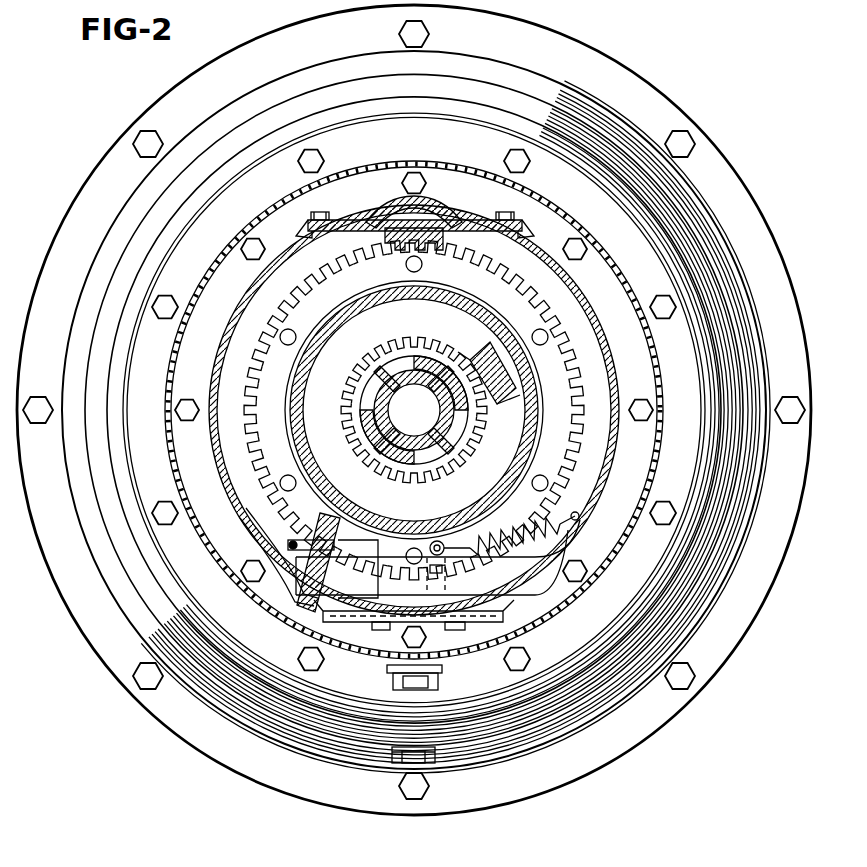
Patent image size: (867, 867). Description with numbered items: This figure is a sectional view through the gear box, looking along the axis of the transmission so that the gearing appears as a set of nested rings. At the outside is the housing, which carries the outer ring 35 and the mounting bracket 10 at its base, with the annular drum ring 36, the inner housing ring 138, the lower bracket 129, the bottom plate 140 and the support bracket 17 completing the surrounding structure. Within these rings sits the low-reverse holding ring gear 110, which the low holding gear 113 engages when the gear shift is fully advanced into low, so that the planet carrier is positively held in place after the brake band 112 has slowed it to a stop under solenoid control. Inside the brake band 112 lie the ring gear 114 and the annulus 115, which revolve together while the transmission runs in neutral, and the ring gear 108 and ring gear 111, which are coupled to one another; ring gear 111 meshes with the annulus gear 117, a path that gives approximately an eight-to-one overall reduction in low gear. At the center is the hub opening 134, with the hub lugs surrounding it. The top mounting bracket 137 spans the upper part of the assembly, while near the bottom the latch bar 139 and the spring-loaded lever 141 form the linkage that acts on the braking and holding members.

The housing mounting bracket 10 is at (406, 766).
The support bracket 17 is at (442, 680).
The outer housing ring 35 is at (118, 232).
The annular drum ring 36 is at (256, 223).
The ring gear 108 is at (364, 394).
The low-reverse holding ring gear 110 is at (250, 422).
The ring gear 111 is at (364, 407).
The brake band 112 is at (296, 447).
The low holding gear 113 is at (403, 254).
The ring gear 114 is at (366, 425).
The annulus 115 is at (368, 370).
The annulus gear 117 is at (472, 357).
The support bracket 129 is at (300, 584).
The shaft opening 134 is at (428, 420).
The top mounting bracket 137 is at (343, 224).
The inner housing ring 138 is at (263, 291).
The latch bar 139 is at (283, 524).
The bottom plate 140 is at (362, 618).
The lever with return spring 141 is at (438, 553).